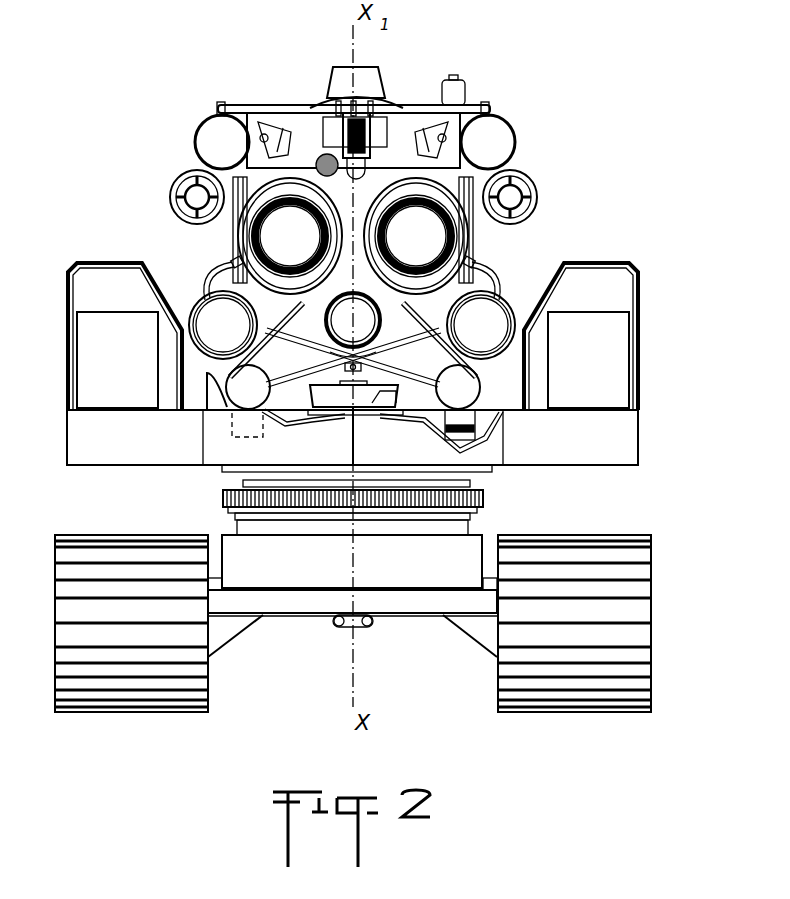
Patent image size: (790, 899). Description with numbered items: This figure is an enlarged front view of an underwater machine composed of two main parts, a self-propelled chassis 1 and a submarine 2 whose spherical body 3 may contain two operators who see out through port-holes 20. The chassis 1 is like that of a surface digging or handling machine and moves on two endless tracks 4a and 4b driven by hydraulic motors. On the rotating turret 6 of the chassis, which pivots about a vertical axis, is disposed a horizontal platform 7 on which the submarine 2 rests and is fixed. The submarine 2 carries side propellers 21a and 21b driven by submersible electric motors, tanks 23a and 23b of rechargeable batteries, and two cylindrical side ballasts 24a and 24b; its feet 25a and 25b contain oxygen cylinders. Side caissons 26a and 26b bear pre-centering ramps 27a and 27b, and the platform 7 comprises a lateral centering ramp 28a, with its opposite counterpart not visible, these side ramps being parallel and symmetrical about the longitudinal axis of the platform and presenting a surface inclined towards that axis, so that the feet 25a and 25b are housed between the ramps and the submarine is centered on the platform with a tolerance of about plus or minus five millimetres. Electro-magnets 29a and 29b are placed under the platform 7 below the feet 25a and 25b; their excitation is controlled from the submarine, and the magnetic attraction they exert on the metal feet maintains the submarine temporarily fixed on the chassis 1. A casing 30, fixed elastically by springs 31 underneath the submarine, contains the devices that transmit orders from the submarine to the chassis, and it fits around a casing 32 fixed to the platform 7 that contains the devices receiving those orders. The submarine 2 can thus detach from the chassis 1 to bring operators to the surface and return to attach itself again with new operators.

The self-propelled chassis 1 is at (308, 575).
The submarine 2 is at (497, 240).
The body 3 is at (361, 284).
The endless track 4a is at (128, 683).
The endless track 4b is at (575, 683).
The rotating turret 6 is at (270, 481).
The horizontal platform 7 is at (513, 410).
The port-holes 20 is at (262, 234).
The side propeller 21a is at (195, 197).
The side propeller 21b is at (512, 197).
The tank of rechargeable batteries 23a is at (238, 338).
The tank of rechargeable batteries 23b is at (496, 338).
The cylindrical side ballast 24a is at (213, 143).
The cylindrical side ballast 24b is at (493, 143).
The foot 25a is at (237, 412).
The foot 25b is at (490, 407).
The side caisson 26a is at (123, 369).
The side caisson 26b is at (593, 369).
The pre-centering ramp 27a is at (163, 278).
The pre-centering ramp 27b is at (546, 283).
The lateral centering ramp 28a is at (217, 395).
The electro-magnet 29a is at (273, 433).
The electro-magnet 29b is at (460, 425).
The casing 30 is at (340, 397).
The springs 31 is at (398, 394).
The casing 32 is at (363, 410).